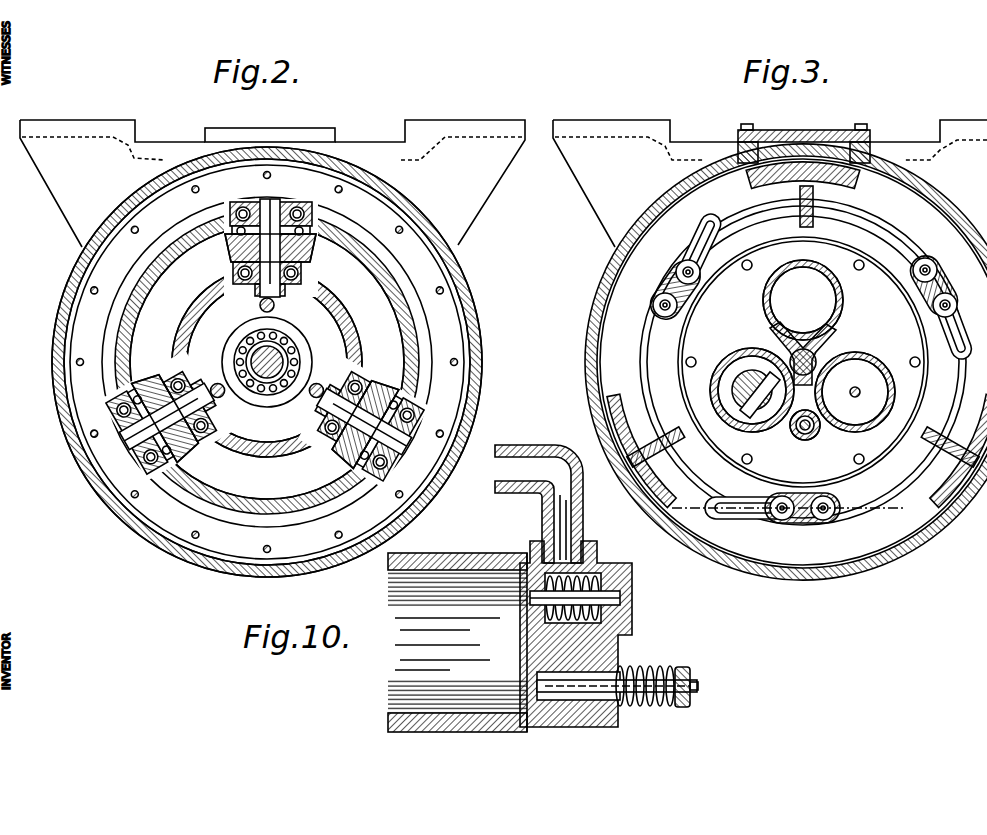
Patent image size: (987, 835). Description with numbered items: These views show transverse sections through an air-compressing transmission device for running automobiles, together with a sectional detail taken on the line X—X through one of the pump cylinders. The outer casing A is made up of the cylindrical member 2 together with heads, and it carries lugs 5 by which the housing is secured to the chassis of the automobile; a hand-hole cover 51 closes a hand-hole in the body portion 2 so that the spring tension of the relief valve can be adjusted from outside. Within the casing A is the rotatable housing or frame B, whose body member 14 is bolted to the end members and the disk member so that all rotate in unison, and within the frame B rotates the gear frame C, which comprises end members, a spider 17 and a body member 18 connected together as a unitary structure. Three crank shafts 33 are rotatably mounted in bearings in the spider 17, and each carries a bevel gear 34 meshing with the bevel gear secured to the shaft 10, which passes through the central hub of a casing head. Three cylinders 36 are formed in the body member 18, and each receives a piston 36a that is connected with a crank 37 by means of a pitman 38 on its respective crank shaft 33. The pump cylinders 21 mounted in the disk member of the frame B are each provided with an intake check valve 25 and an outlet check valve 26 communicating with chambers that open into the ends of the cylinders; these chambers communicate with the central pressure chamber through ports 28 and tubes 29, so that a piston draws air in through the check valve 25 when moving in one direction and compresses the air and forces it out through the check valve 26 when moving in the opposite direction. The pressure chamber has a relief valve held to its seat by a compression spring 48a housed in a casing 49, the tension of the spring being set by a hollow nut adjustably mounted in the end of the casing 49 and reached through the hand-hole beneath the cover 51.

In FIG. 2, the cylindrical member 2 is at (125, 205).
In FIG. 3, the cylindrical member 2 is at (677, 205).
In FIG. 2, the lugs 5 is at (89, 130).
In FIG. 3, the lugs 5 is at (614, 130).
In FIG. 2, the shaft 10 is at (292, 354).
In FIG. 3, the body member 14 is at (842, 182).
In FIG. 2, the spider 17 is at (188, 232).
In FIG. 3, the spider 17 is at (822, 255).
In FIG. 3, the body member 18 is at (852, 262).
In FIG. 10, the pump cylinders 21 is at (457, 642).
In FIG. 3, the intake check valve 25 is at (655, 305).
In FIG. 10, the intake check valve 25 is at (537, 684).
In FIG. 3, the outlet check valve 26 is at (677, 271).
In FIG. 10, the outlet check valve 26 is at (543, 604).
In FIG. 10, the ports 28 is at (600, 578).
In FIG. 3, the tubes 29 is at (718, 222).
In FIG. 10, the tubes 29 is at (523, 478).
In FIG. 2, the crank shafts 33 is at (300, 247).
In FIG. 2, the bevel gear 34 is at (228, 244).
In FIG. 2, the cylinders 36 is at (307, 303).
In FIG. 3, the cylinders 36 is at (752, 360).
In FIG. 2, the piston 36a is at (300, 300).
In FIG. 3, the piston 36a is at (740, 370).
In FIG. 2, the crank 37 is at (225, 287).
In FIG. 2, the pitman 38 is at (262, 307).
In FIG. 3, the compression spring 48a is at (808, 436).
In FIG. 3, the casing 49 is at (797, 432).
In FIG. 2, the hand-hole cover 51 is at (282, 130).
In FIG. 3, the hand-hole cover 51 is at (806, 131).
In FIG. 2, the casing A is at (252, 362).
In FIG. 3, the casing A is at (612, 262).
In FIG. 2, the housing B is at (100, 306).
In FIG. 3, the housing B is at (797, 352).
In FIG. 2, the gear frame C is at (112, 332).
In FIG. 3, the section line X is at (788, 513).